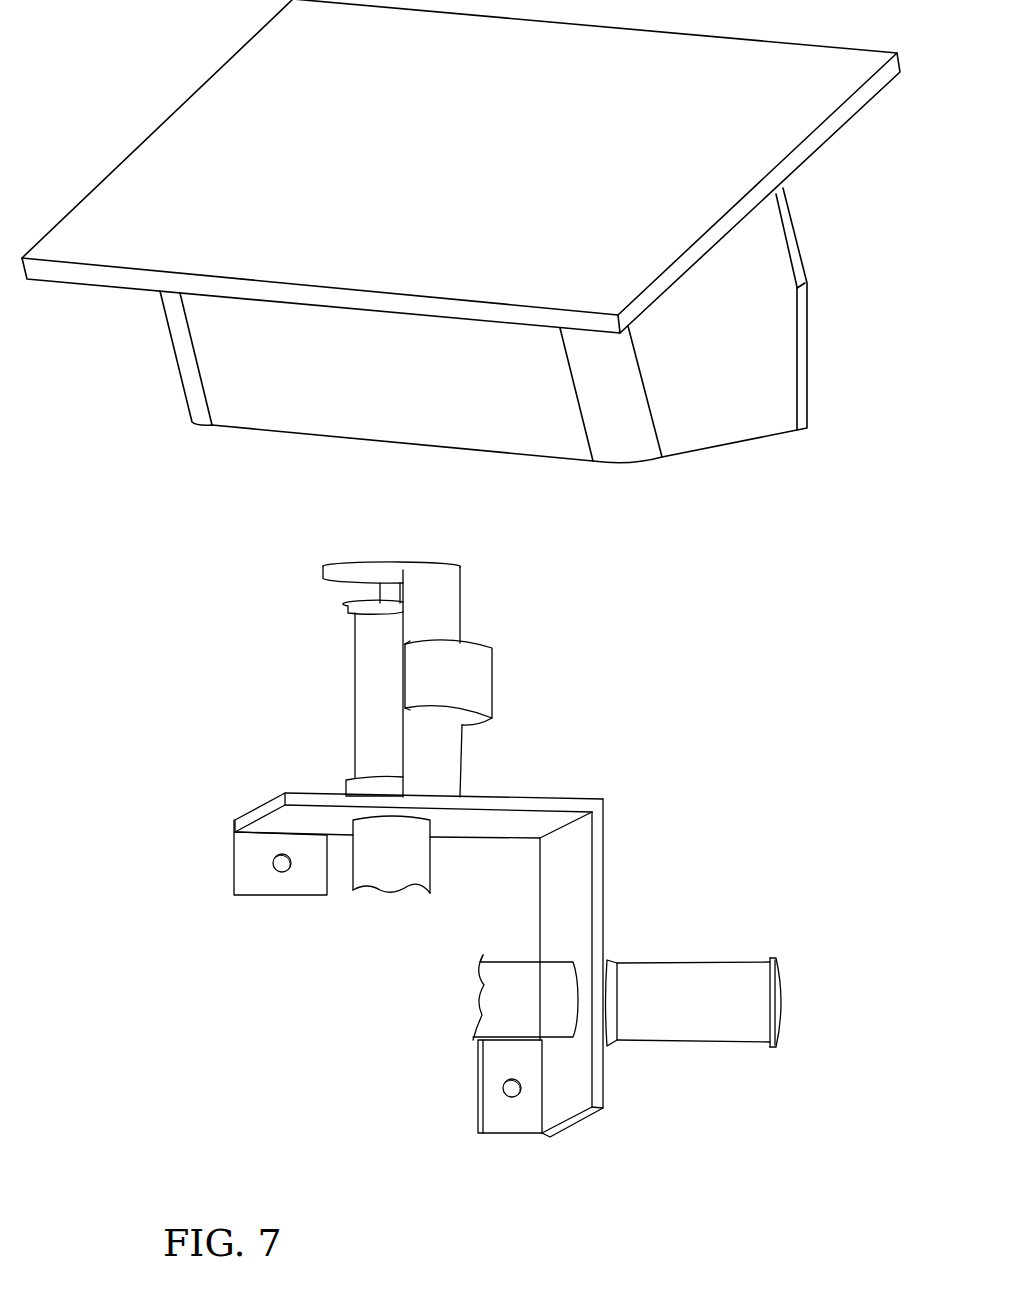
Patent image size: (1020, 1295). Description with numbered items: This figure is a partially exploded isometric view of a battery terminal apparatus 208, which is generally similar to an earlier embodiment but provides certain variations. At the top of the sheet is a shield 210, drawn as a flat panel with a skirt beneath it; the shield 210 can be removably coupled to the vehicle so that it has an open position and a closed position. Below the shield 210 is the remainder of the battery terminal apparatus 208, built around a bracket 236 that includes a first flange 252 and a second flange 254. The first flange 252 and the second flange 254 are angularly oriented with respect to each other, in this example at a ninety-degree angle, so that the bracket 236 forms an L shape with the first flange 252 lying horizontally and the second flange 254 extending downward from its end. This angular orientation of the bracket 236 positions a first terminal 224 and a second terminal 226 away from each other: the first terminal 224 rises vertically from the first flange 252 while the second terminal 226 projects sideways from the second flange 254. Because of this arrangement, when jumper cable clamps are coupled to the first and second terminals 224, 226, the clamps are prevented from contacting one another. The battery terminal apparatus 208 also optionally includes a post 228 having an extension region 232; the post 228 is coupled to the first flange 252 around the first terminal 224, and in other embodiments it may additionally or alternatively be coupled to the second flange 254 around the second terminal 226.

The shield 210 is at (150, 52).
The battery terminal apparatus 208 is at (401, 822).
The post 228 is at (463, 607).
The first terminal 224 is at (380, 685).
The extension region 232 is at (492, 678).
The first flange 252 is at (548, 796).
The second flange 254 is at (605, 883).
The bracket 236 is at (540, 878).
The second terminal 226 is at (698, 1043).